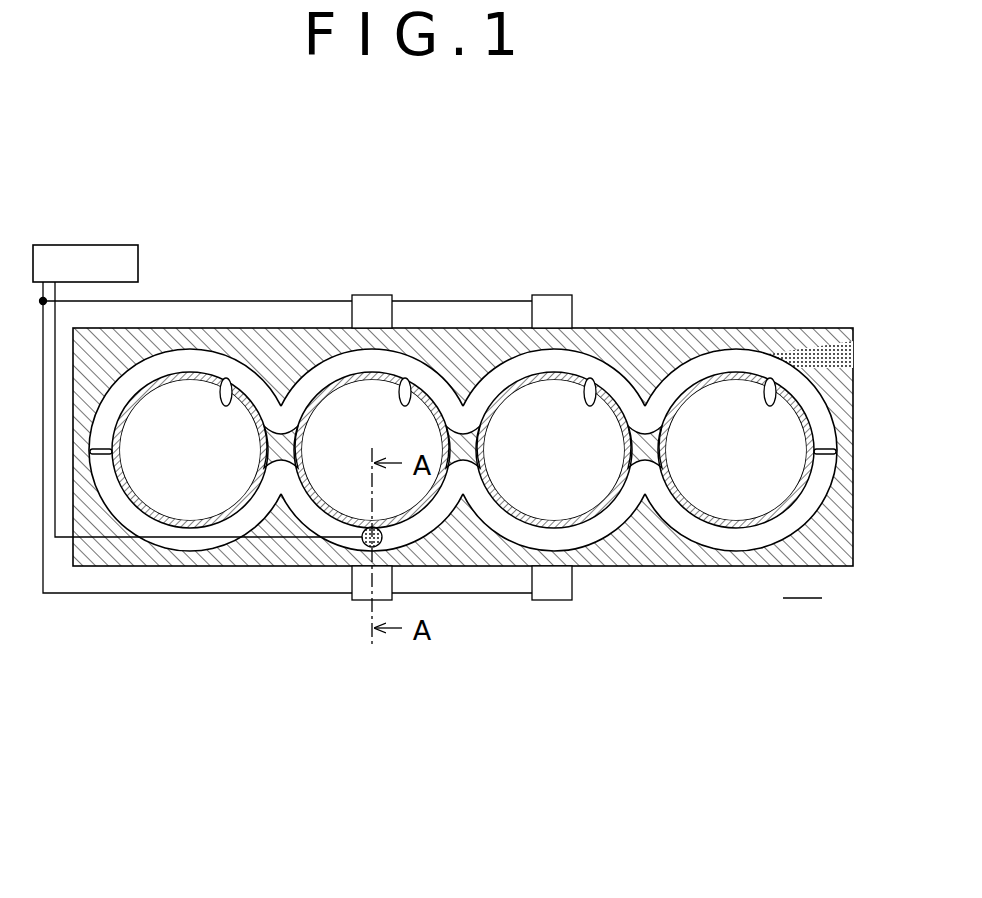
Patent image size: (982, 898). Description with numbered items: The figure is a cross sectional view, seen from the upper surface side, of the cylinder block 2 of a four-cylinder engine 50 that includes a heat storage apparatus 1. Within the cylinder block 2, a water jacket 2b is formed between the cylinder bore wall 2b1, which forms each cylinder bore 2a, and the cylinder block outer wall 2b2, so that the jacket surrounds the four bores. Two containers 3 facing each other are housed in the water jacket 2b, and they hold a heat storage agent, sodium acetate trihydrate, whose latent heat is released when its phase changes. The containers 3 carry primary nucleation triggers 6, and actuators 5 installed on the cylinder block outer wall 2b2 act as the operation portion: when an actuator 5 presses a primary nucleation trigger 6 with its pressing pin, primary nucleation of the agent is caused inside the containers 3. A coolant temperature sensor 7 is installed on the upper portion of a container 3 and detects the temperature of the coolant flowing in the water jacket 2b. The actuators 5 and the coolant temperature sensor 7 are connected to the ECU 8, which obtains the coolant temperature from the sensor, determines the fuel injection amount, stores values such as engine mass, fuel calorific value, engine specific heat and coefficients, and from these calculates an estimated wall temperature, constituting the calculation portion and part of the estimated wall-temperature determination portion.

The heat storage apparatus 1 is at (340, 692).
The cylinder block 2 is at (102, 545).
The cylinder bore 2a is at (227, 380).
The water jacket 2b is at (678, 358).
The cylinder bore wall 2b1 is at (253, 495).
The cylinder block outer wall 2b2 is at (137, 557).
The container 3 is at (178, 362).
The actuator 5 is at (375, 302).
The primary nucleation trigger 6 is at (348, 333).
The coolant temperature sensor 7 is at (362, 540).
The ECU 8 is at (128, 248).
The four-cylinder engine 50 is at (802, 583).